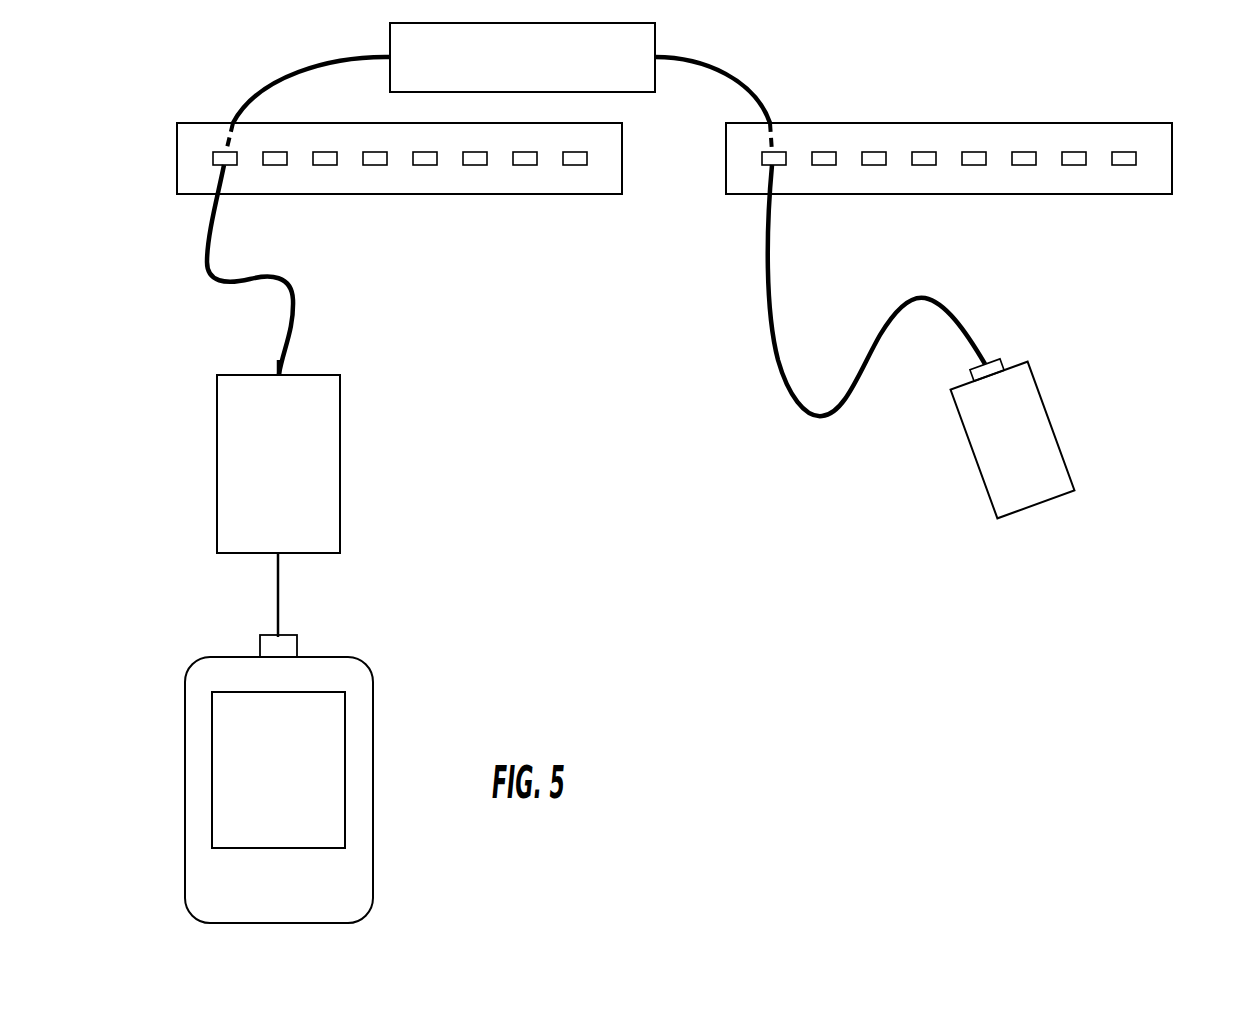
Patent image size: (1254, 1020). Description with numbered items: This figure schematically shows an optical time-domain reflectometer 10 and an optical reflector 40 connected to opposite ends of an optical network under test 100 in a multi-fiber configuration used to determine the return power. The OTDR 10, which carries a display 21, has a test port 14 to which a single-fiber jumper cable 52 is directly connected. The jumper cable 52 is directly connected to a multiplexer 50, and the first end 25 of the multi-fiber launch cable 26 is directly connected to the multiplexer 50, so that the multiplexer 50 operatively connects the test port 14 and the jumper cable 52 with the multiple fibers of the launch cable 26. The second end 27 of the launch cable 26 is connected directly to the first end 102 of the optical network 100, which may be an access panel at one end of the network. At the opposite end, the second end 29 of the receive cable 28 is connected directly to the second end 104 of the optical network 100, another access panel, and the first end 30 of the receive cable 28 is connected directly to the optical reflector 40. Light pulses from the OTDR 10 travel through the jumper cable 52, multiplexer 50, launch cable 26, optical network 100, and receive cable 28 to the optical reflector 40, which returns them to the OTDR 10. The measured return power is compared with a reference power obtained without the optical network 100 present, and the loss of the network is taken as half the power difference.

The optical time-domain reflectometer 10 is at (159, 778).
The test port 14 is at (260, 648).
The display 21 is at (290, 780).
The first end of the launch cable 25 is at (277, 374).
The launch cable 26 is at (281, 272).
The second end of the launch cable 27 is at (218, 178).
The receive cable 28 is at (806, 413).
The second end of the receive cable 29 is at (767, 180).
The first end of the receive cable 30 is at (997, 360).
The optical reflector 40 is at (1063, 455).
The multiplexer 50 is at (342, 472).
The jumper cable 52 is at (280, 608).
The optical network under test 100 is at (540, 72).
The first end of the optical network 102 is at (177, 160).
The second end of the optical network 104 is at (1172, 160).